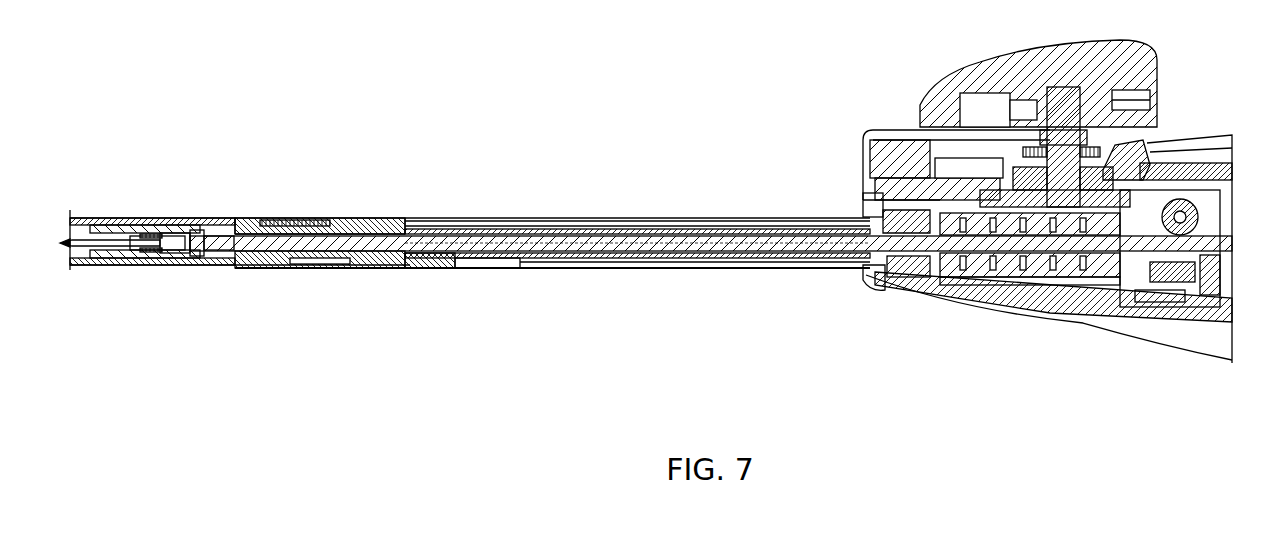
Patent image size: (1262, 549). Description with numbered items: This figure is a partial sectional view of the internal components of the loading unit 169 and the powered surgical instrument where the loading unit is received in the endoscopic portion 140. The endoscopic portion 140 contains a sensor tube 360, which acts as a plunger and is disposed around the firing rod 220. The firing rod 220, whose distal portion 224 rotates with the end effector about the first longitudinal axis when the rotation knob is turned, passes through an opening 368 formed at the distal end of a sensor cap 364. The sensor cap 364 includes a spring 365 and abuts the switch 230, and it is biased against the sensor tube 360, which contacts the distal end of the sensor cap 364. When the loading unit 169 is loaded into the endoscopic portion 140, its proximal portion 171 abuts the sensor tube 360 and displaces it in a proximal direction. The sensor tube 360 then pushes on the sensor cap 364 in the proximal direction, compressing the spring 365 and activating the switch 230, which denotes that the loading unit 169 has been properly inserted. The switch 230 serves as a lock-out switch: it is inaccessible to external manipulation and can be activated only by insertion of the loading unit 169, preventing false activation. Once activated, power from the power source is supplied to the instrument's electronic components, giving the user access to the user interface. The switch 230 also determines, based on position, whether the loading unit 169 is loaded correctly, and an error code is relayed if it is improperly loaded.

The endoscopic portion 140 is at (514, 190).
The loading unit 169 is at (172, 206).
The distal portion of firing rod 224 is at (318, 218).
The proximal portion 171 is at (278, 264).
The firing rod 220 is at (750, 242).
The sensor tube 360 is at (540, 269).
The opening 368 is at (927, 257).
The sensor cap 364 is at (977, 286).
The spring 365 is at (1130, 188).
The switch 230 is at (1200, 312).